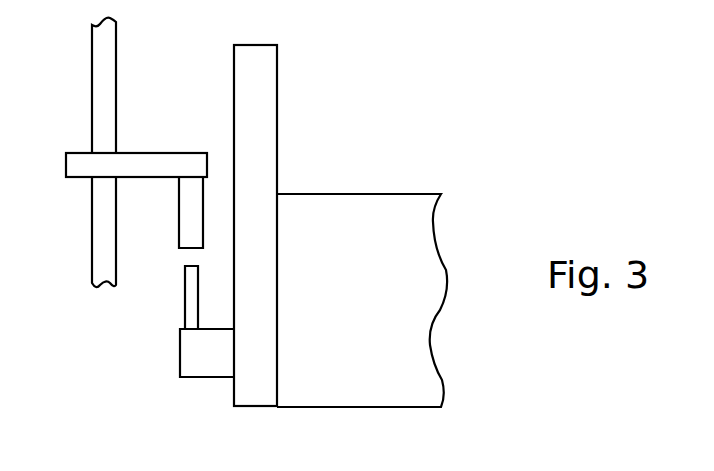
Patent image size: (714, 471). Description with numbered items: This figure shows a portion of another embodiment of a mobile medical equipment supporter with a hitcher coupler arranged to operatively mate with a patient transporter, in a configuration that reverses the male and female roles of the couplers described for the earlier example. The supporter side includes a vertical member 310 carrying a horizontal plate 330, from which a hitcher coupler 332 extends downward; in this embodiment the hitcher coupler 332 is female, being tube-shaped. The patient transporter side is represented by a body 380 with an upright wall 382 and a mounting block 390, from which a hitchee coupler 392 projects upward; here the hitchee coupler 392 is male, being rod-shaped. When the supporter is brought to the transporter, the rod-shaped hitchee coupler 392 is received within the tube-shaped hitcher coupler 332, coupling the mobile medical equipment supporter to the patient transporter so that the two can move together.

The vertical member 310 is at (92, 115).
The horizontal plate 330 is at (134, 153).
The hitcher coupler 332 is at (180, 212).
The housing block 380 is at (335, 194).
The vertical wall 382 is at (278, 105).
The mounting block 390 is at (200, 378).
The hitchee coupler 392 is at (183, 307).